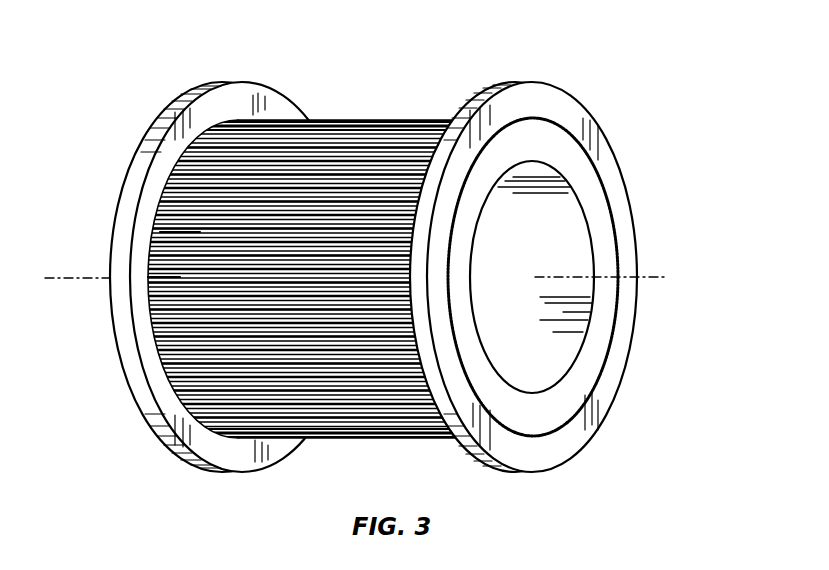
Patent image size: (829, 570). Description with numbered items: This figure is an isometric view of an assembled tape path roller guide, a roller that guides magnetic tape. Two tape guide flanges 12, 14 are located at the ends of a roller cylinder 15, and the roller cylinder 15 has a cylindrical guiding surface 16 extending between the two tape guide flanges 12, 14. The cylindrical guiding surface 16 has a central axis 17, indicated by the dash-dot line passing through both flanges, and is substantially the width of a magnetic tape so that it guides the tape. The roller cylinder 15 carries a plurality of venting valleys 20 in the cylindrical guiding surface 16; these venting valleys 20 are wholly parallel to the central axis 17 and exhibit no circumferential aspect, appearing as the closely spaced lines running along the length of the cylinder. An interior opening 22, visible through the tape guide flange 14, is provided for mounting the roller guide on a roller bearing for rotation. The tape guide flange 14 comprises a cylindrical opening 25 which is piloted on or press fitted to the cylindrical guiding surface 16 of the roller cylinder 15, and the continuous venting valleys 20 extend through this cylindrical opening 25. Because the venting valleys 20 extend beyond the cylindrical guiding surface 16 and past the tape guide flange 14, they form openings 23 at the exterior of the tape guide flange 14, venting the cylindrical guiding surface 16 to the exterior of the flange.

The tape guide flange 12 is at (218, 86).
The tape guide flange 14 is at (520, 83).
The roller cylinder 15 is at (419, 438).
The cylindrical guiding surface 16 is at (418, 119).
The central axis 17 is at (98, 276).
The venting valleys 20 is at (182, 188).
The interior opening 22 is at (576, 199).
The openings 23 is at (451, 292).
The cylindrical opening 25 is at (606, 141).